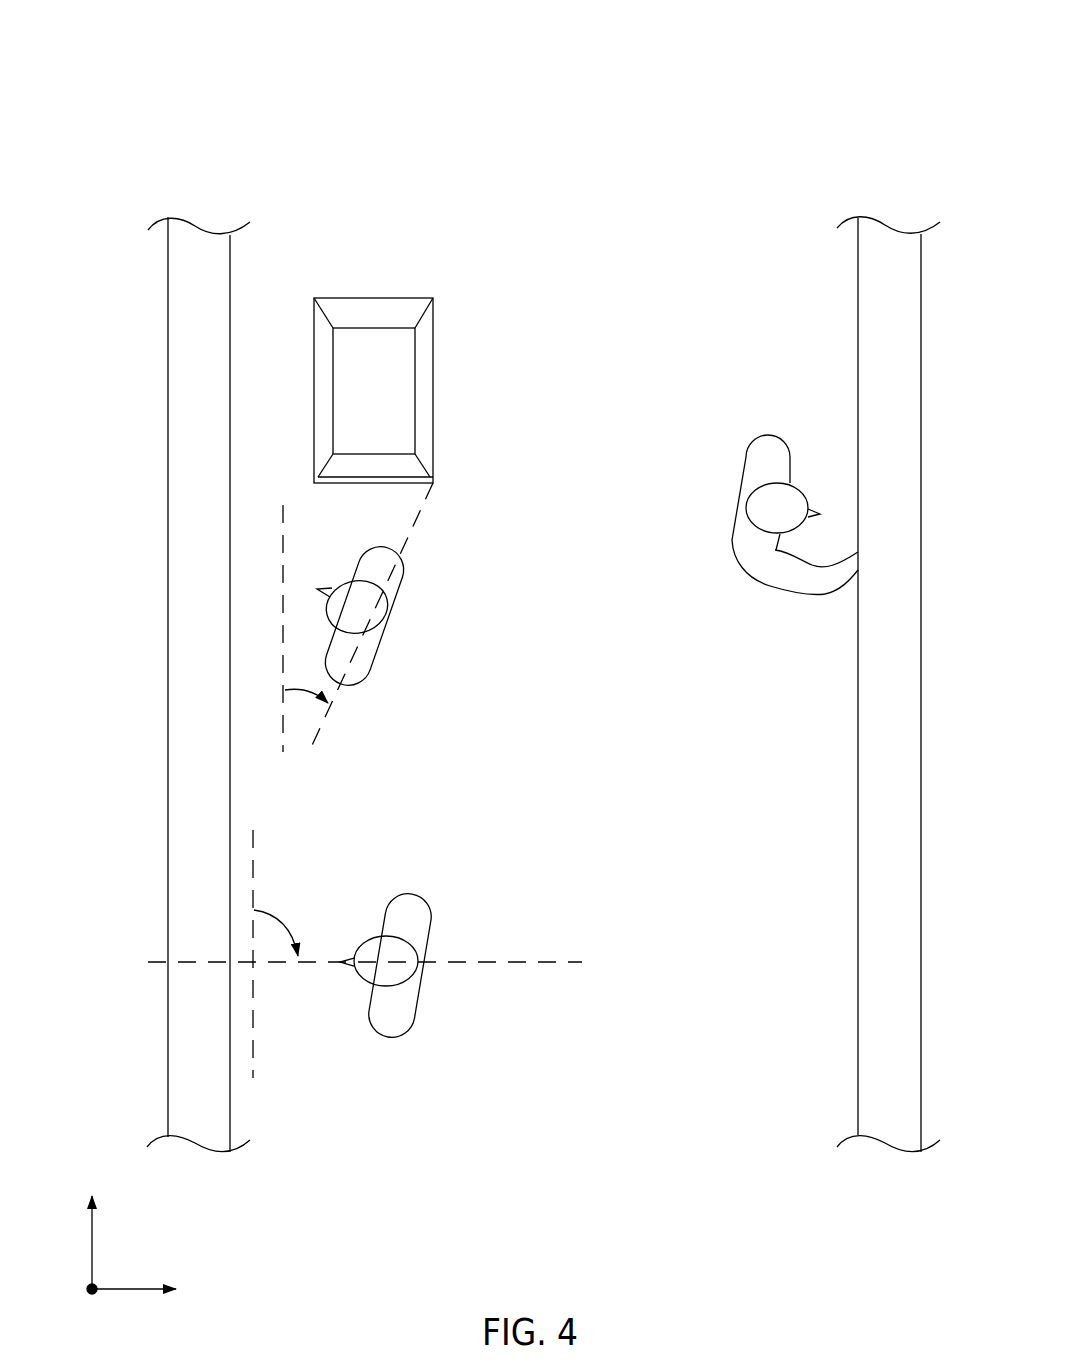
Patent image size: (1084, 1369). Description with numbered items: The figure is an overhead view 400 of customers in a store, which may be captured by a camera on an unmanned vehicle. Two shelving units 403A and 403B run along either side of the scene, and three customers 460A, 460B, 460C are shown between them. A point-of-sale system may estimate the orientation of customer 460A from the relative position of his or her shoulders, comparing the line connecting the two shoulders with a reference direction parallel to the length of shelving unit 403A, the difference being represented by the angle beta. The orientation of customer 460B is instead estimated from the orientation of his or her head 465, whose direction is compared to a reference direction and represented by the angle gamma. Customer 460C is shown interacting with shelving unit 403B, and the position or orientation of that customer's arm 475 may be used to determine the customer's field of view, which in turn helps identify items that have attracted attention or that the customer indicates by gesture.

The overhead view 400 is at (233, 72).
The shelving unit 403A is at (212, 310).
The shelving unit 403B is at (877, 335).
The customer 460A is at (455, 666).
The customer 460B is at (448, 922).
The customer 460C is at (750, 418).
The head 465 is at (410, 972).
The arm 475 is at (800, 583).